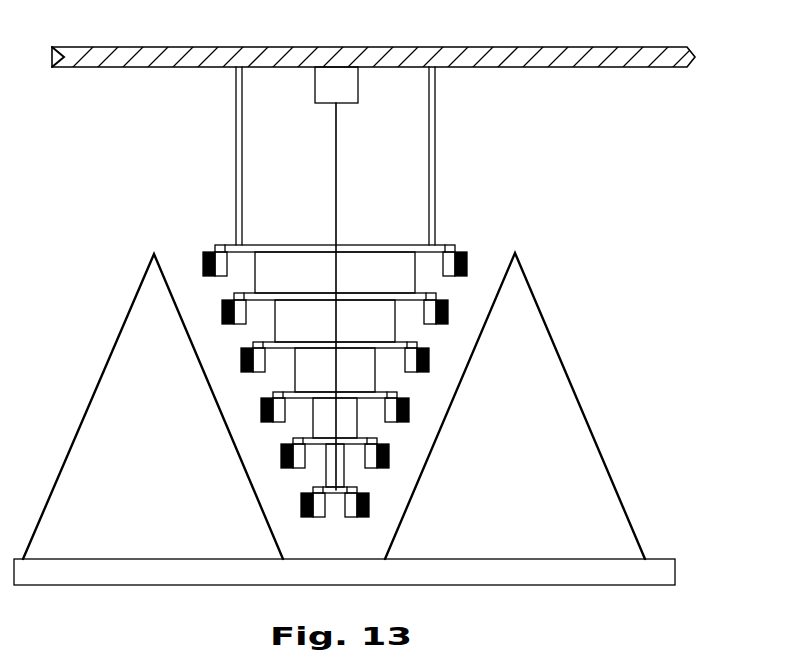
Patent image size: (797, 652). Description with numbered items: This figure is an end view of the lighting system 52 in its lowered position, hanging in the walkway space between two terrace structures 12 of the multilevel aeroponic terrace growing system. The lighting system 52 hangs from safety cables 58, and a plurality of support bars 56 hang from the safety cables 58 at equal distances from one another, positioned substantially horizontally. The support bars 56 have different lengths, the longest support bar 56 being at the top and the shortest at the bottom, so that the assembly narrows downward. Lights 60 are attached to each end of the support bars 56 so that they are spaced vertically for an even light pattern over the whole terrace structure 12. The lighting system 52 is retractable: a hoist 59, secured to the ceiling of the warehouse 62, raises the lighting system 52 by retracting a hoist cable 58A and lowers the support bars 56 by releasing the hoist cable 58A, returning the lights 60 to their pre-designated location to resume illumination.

The terrace structure 12 is at (132, 303).
The lighting system 52 is at (180, 240).
The support bar 56 is at (400, 245).
The safety cable 58 is at (235, 157).
The hoist cable 58A is at (335, 155).
The hoist 59 is at (343, 95).
The light 60 is at (468, 255).
The warehouse 62 is at (667, 47).